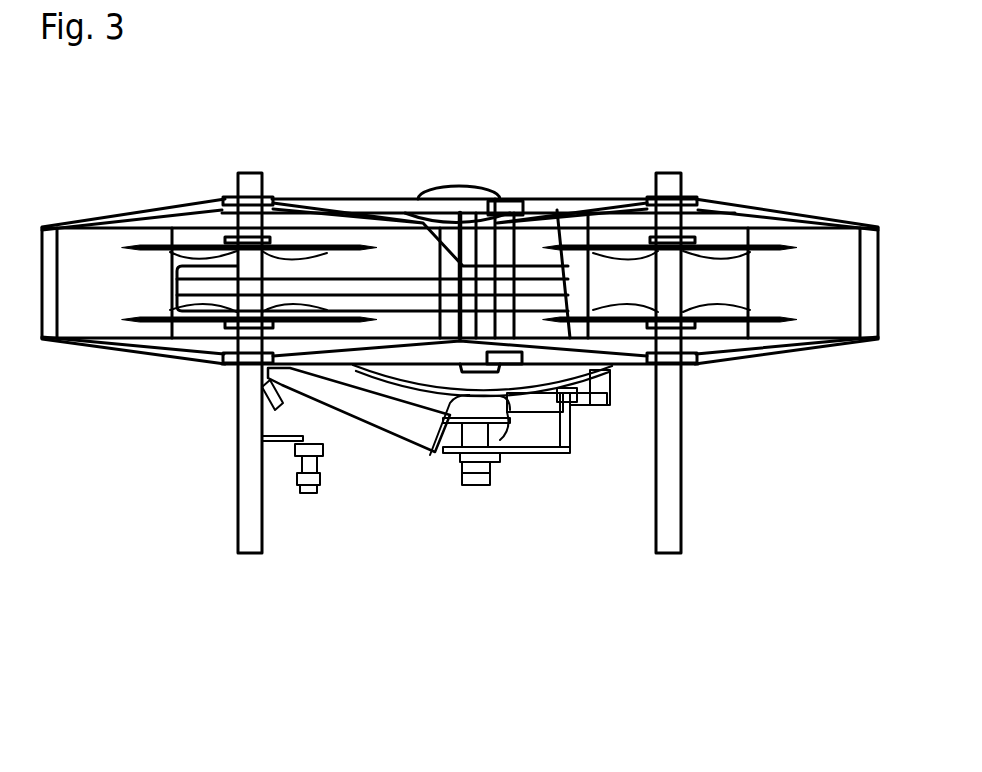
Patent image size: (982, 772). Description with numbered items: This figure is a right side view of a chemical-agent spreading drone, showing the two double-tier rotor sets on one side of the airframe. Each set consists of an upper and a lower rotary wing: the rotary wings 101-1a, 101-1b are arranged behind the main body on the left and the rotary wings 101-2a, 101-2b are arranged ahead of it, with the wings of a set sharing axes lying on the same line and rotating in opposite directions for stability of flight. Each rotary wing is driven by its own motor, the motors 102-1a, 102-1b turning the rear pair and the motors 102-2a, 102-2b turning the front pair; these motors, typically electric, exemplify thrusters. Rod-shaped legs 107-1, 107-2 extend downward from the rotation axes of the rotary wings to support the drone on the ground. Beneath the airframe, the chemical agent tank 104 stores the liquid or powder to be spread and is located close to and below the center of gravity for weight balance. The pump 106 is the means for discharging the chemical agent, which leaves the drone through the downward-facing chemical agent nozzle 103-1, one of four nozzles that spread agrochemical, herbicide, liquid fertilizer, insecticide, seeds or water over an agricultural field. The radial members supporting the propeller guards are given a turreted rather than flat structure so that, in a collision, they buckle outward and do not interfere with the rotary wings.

The rotary wing 101-1a is at (769, 244).
The rotary wing 101-1b is at (768, 322).
The rotary wing 101-2a is at (130, 243).
The rotary wing 101-2b is at (132, 322).
The motor 102-1a is at (650, 240).
The motor 102-1b is at (694, 310).
The motor 102-2a is at (292, 204).
The motor 102-2b is at (228, 326).
The chemical agent nozzle 103-1 is at (308, 493).
The chemical agent tank 104 is at (560, 372).
The pump 106 is at (393, 413).
The leg 107-1 is at (670, 555).
The leg 107-2 is at (250, 555).